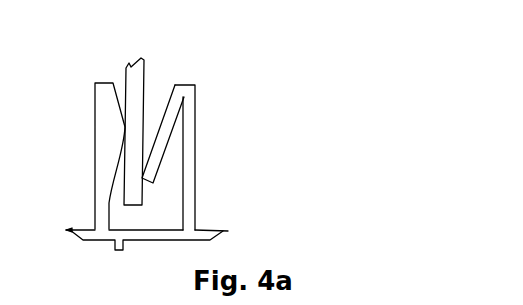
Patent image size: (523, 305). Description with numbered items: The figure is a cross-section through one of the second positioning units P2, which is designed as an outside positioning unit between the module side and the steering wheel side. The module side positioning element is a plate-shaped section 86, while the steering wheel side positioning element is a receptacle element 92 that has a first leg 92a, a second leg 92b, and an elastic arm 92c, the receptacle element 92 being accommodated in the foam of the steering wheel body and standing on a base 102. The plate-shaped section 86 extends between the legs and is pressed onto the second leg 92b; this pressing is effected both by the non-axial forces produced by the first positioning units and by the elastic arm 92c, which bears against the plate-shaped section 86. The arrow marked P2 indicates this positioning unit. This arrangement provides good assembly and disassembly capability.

The plate-shaped section 86 is at (131, 123).
The receptacle element 92 is at (188, 190).
The first leg 92a is at (184, 148).
The second leg 92b is at (108, 158).
The elastic arm 92c is at (167, 126).
The base 102 is at (223, 232).
The second positioning unit P2 is at (280, 158).